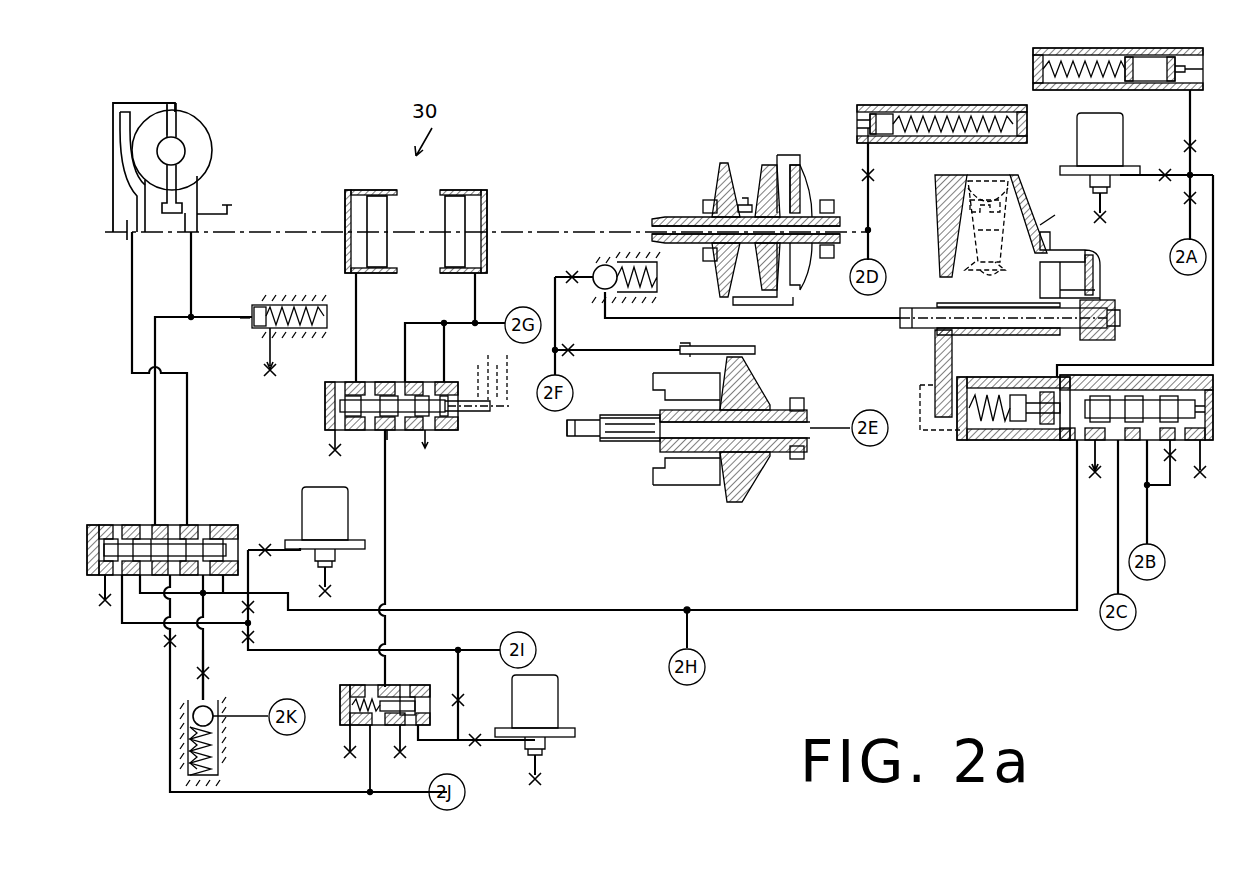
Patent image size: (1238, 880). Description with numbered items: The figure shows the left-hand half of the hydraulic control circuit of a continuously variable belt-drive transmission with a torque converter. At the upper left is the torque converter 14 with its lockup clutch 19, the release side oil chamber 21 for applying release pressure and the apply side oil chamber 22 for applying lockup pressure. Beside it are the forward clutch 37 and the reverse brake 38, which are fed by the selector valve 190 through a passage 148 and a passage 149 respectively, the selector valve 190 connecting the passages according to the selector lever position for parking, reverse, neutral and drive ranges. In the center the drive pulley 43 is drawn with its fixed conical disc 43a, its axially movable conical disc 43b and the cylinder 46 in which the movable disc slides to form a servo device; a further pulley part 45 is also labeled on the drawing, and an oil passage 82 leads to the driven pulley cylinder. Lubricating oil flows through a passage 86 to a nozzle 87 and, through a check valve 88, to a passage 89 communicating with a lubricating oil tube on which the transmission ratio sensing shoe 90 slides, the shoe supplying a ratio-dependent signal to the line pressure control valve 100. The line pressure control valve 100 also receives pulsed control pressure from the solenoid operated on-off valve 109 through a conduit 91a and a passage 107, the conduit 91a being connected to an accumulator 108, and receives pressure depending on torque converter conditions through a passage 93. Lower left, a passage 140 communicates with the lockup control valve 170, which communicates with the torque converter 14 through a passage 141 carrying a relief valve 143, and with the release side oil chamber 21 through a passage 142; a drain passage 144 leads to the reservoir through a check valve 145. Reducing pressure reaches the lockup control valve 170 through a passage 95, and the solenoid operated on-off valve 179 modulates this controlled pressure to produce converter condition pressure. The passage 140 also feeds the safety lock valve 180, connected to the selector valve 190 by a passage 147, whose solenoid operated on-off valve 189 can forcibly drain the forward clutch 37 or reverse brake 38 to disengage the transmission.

The torque converter 14 is at (157, 157).
The lockup clutch 19 is at (126, 116).
The release side oil chamber 21 is at (118, 190).
The apply side oil chamber 22 is at (154, 108).
The forward clutch 37 is at (356, 196).
The reverse brake 38 is at (475, 198).
The drive pulley 43 is at (716, 165).
The fixed conical disc 43a is at (973, 302).
The axially movable conical disc 43b is at (1034, 236).
The movable sheave 45 is at (745, 197).
The cylinder 46 is at (790, 183).
The oil passage 82 is at (828, 428).
The passage 86 is at (585, 363).
The nozzle 87 is at (748, 352).
The check valve 88 is at (622, 262).
The passage 89 is at (708, 318).
The transmission ratio sensing shoe 90 is at (996, 336).
The conduit 91a is at (1190, 228).
The passage 93 is at (875, 608).
The passage 95 is at (316, 652).
The line pressure control valve 100 is at (1058, 438).
The passage 107 is at (1180, 362).
The accumulator 108 is at (1030, 70).
The solenoid operated on-off valve 109 is at (1122, 135).
The passage 140 is at (311, 794).
The passage 141 is at (153, 470).
The passage 142 is at (150, 283).
The relief valve 143 is at (305, 298).
The drain passage 144 is at (208, 658).
The check valve 145 is at (210, 758).
The passage 147 is at (387, 542).
The passage 148 is at (380, 320).
The passage 149 is at (470, 310).
The lockup control valve 170 is at (120, 528).
The solenoid operated on-off valve 179 is at (302, 500).
The safety lock valve 180 is at (348, 692).
The solenoid operated on-off valve 189 is at (590, 706).
The selector valve 190 is at (446, 435).